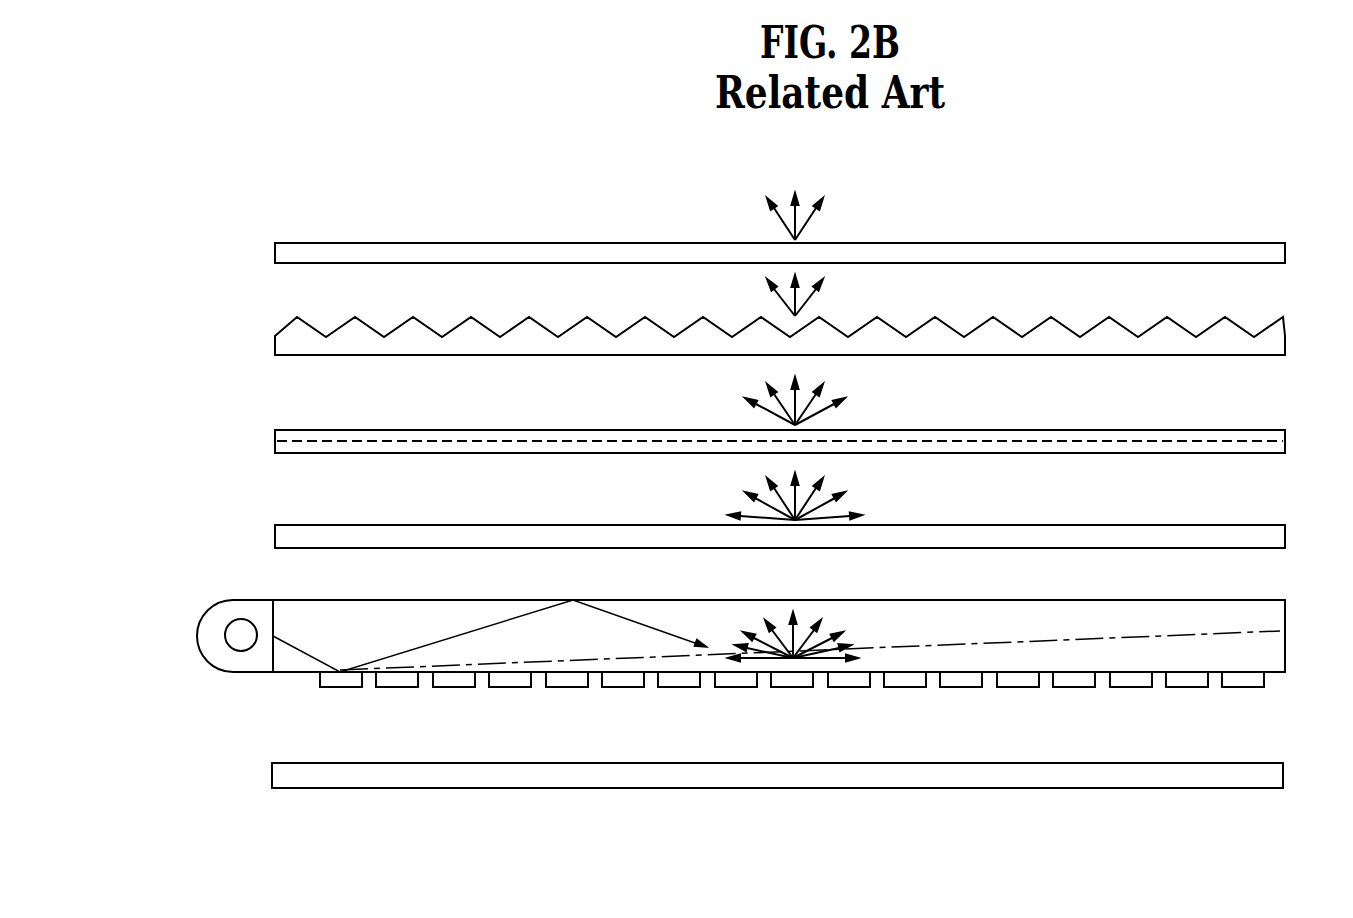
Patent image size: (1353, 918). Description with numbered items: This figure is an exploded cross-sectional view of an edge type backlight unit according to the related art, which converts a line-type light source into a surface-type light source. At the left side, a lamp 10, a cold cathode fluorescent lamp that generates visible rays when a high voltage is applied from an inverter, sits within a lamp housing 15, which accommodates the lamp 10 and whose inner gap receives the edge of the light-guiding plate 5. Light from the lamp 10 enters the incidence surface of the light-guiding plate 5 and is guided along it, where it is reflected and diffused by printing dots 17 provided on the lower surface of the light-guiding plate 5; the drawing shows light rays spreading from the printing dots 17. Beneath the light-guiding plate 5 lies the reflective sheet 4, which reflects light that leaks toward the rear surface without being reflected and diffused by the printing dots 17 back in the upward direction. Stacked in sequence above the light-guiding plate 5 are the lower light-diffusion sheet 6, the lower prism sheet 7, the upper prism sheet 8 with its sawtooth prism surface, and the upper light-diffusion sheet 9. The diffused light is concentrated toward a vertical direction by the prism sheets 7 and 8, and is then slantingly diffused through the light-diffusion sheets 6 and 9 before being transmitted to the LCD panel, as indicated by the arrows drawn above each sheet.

The reflective sheet 4 is at (1142, 778).
The light-guiding plate 5 is at (1275, 656).
The lower light-diffusion sheet 6 is at (1278, 538).
The lower prism sheet 7 is at (1278, 442).
The upper prism sheet 8 is at (1278, 344).
The upper light-diffusion sheet 9 is at (1278, 258).
The lamp 10 is at (238, 633).
The lamp housing 15 is at (200, 655).
The printing dots 17 is at (791, 688).